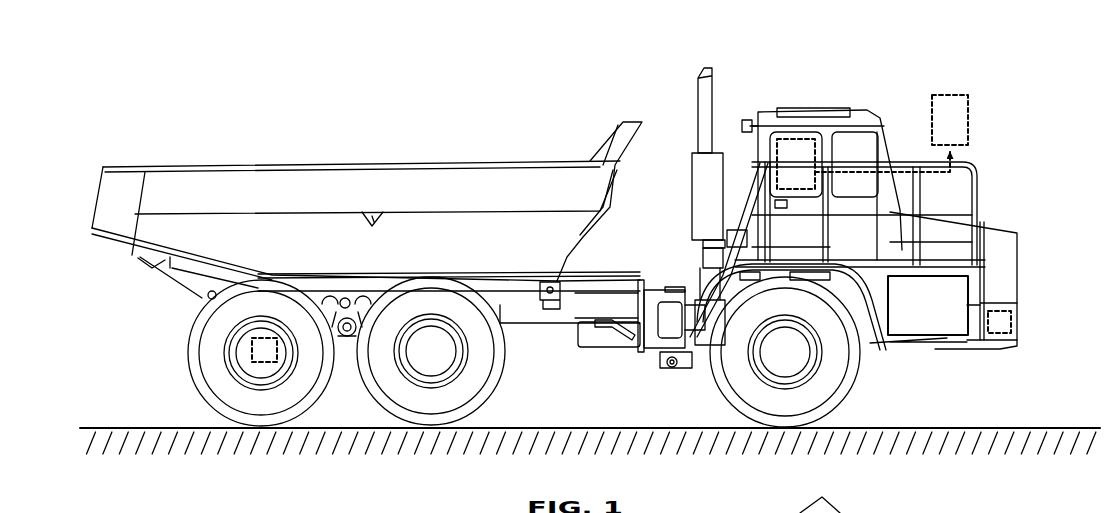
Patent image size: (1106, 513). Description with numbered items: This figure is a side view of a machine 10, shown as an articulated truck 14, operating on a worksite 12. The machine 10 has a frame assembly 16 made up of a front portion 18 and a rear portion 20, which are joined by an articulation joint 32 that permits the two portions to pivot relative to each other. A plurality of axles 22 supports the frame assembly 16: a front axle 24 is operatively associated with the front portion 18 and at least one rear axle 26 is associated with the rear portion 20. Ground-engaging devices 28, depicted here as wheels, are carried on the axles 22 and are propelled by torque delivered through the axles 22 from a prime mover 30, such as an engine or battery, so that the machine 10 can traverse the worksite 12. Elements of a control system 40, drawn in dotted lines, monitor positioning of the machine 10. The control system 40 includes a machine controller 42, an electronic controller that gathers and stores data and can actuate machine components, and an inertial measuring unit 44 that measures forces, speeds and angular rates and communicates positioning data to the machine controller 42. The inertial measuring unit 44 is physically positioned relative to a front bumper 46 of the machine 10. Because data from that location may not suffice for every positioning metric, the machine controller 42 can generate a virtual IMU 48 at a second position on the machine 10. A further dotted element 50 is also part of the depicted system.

The machine 10 is at (352, 93).
The worksite 12 is at (940, 422).
The articulated truck 14 is at (290, 150).
The frame assembly 16 is at (648, 253).
The front portion 18 is at (661, 350).
The rear portion 20 is at (532, 330).
The plurality of axles 22 is at (248, 358).
The front axle 24 is at (790, 365).
The rear axle 26 is at (265, 365).
The ground-engaging devices 28 is at (200, 397).
The prime mover 30 is at (955, 338).
The articulation joint 32 is at (640, 298).
The control system 40 is at (520, 128).
The machine controller 42 is at (805, 140).
The inertial measuring unit (IMU) 44 is at (1000, 312).
The front bumper 46 is at (1020, 340).
The virtual IMU 48 is at (268, 338).
The remote system / communication module 50 is at (945, 95).